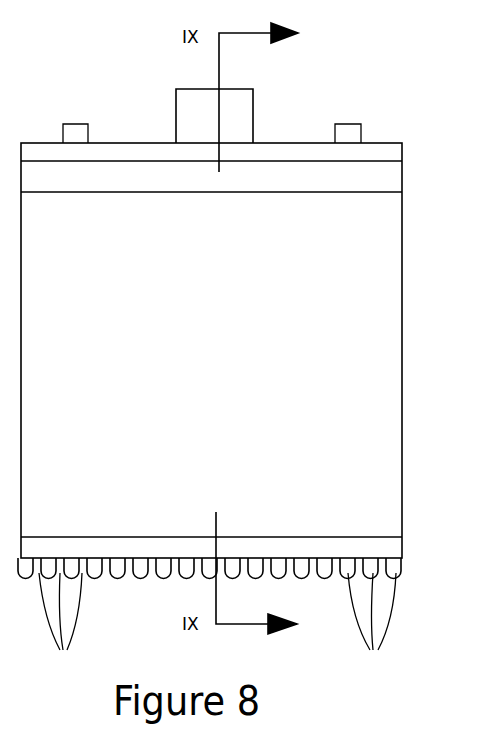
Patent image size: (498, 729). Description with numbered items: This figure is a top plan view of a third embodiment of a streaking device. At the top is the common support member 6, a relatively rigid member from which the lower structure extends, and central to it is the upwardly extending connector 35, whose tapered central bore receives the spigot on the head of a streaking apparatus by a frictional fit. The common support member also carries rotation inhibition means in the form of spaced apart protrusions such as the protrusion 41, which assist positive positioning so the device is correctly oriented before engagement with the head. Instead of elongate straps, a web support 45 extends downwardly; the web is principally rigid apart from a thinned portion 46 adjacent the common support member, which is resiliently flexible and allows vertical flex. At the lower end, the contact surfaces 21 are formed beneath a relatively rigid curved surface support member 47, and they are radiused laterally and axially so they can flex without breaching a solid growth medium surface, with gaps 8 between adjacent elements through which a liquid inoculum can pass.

The common support member 6 is at (291, 151).
The connector 35 is at (197, 102).
The protrusion 41 is at (348, 133).
The thinned portion 46 is at (330, 176).
The web support 45 is at (356, 401).
The curved surface support member 47 is at (356, 544).
The gaps 8 is at (60, 629).
The contact surfaces 21 is at (372, 628).